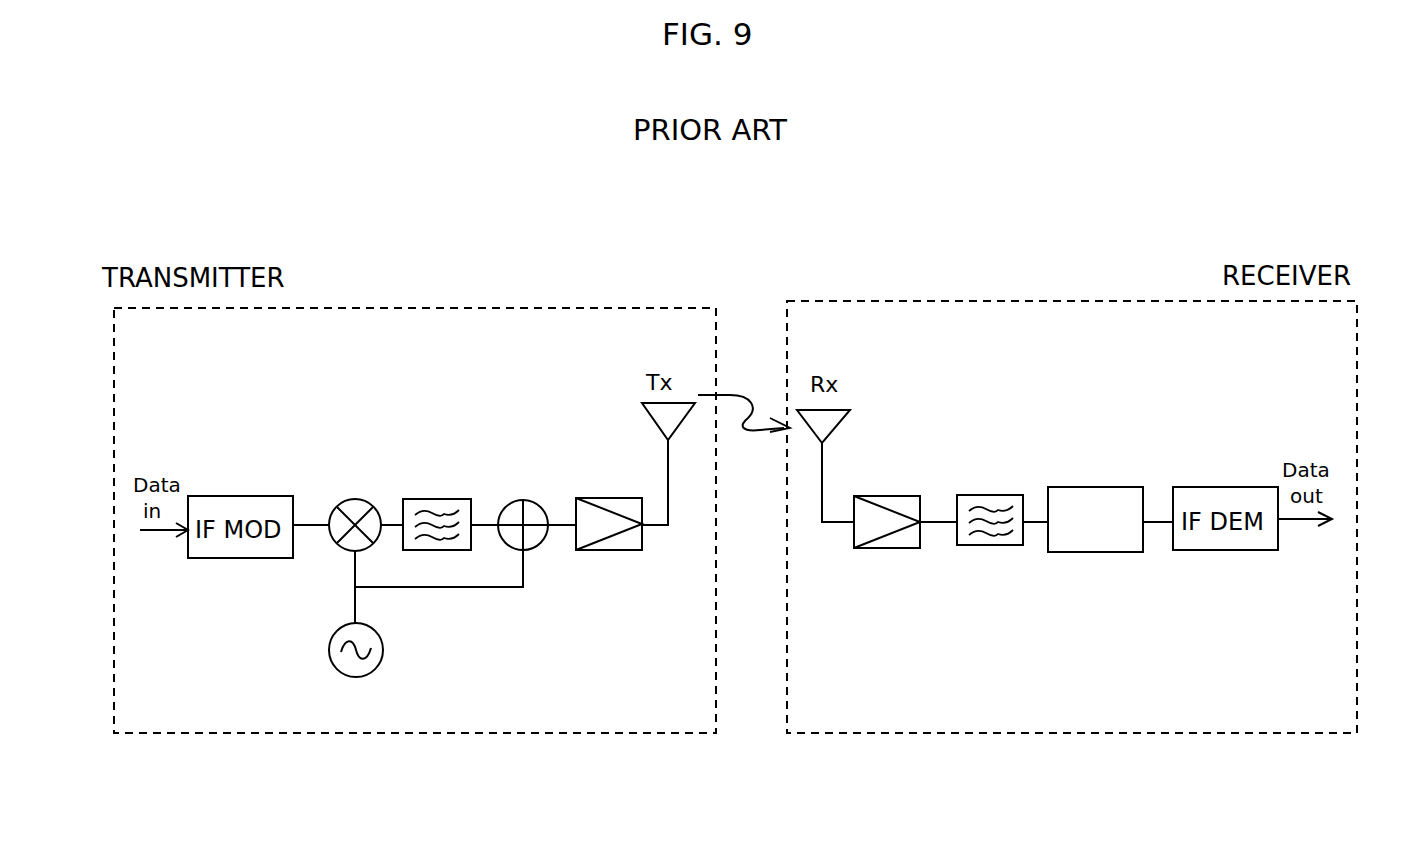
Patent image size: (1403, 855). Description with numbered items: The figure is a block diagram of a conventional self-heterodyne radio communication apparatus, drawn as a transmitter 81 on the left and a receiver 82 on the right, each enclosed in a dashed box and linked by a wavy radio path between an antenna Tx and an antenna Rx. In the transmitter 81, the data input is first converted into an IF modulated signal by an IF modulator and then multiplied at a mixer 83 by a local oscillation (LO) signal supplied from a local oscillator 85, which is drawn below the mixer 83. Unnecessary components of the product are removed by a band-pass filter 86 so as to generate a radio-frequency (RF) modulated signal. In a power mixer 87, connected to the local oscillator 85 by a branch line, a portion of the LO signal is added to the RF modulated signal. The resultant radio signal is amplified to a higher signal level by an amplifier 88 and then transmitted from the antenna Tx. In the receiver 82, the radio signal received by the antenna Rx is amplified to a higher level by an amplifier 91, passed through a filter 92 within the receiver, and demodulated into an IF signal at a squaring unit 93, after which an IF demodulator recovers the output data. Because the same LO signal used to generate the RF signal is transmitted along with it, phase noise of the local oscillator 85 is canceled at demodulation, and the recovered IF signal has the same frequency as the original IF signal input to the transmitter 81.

The transmitter 81 is at (427, 323).
The receiver 82 is at (993, 323).
The mixer 83 is at (355, 505).
The local oscillator 85 is at (356, 653).
The band-pass filter 86 is at (437, 504).
The power mixer 87 is at (523, 504).
The amplifier 88 is at (609, 504).
The amplifier 91 is at (884, 499).
The filter 92 is at (990, 497).
The squaring unit 93 is at (1095, 501).